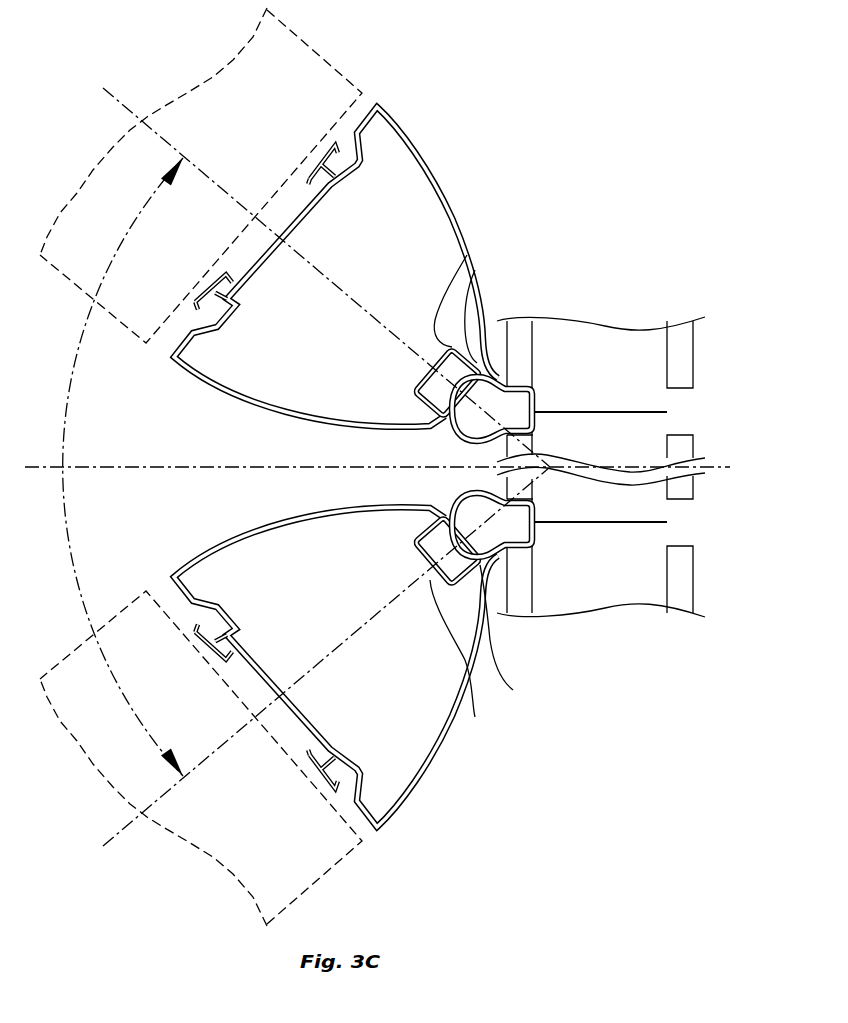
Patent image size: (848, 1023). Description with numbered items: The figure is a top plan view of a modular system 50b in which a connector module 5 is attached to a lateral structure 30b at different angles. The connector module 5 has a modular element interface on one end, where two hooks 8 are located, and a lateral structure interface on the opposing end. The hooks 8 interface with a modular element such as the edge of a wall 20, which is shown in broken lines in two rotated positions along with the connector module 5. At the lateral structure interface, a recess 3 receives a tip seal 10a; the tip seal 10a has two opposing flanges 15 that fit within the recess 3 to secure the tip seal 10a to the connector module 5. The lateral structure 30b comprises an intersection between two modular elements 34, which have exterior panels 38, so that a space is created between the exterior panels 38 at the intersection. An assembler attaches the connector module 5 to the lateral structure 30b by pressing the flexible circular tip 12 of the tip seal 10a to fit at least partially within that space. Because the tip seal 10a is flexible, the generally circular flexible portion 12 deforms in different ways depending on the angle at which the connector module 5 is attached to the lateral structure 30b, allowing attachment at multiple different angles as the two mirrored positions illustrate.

The recess 3 is at (467, 255).
The connector module 5 is at (408, 107).
The hooks 8 is at (313, 146).
The tip seal 10a is at (522, 259).
The flexible circular tip 12 is at (497, 378).
The opposing flanges 15 is at (475, 270).
The wall 20 is at (283, 27).
The lateral structure 30b is at (639, 269).
The modular elements 34 is at (588, 328).
The exterior panels 38 is at (522, 327).
The modular system 50b is at (567, 109).